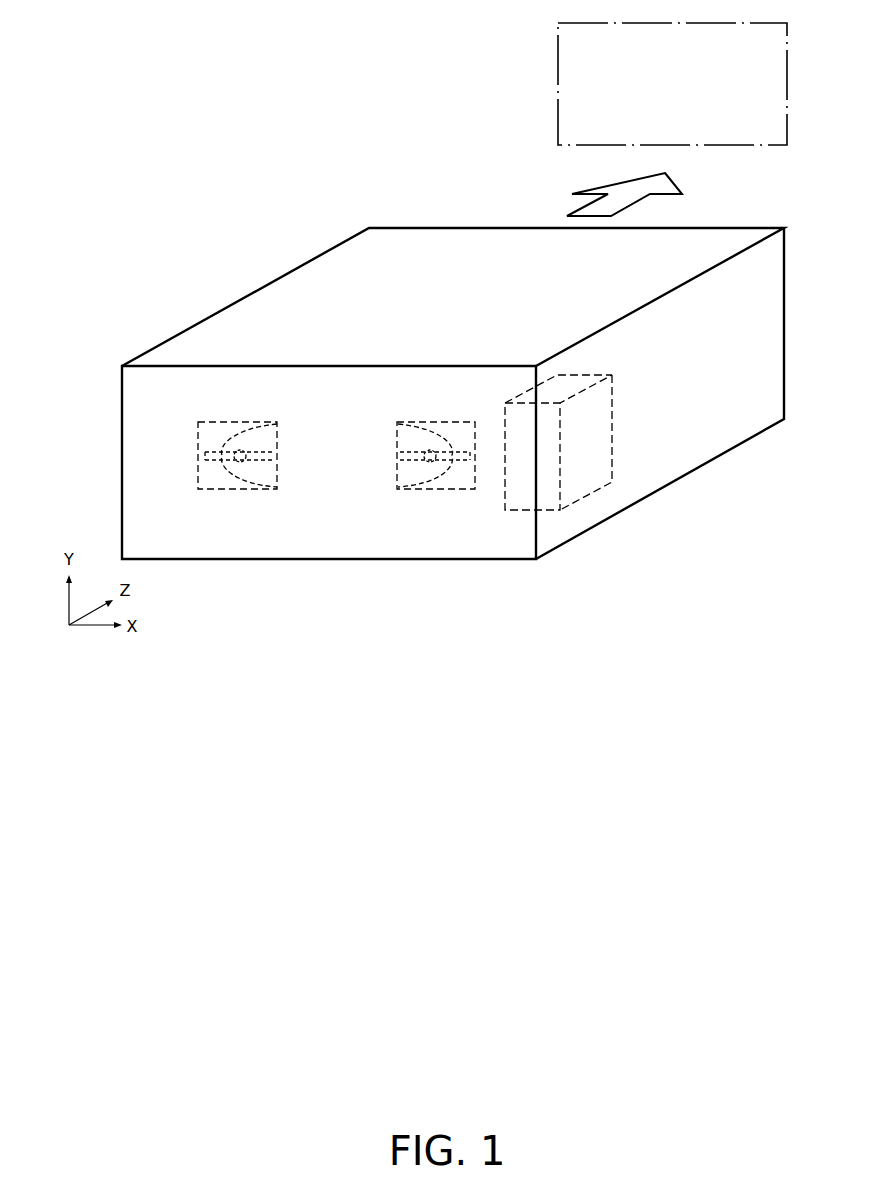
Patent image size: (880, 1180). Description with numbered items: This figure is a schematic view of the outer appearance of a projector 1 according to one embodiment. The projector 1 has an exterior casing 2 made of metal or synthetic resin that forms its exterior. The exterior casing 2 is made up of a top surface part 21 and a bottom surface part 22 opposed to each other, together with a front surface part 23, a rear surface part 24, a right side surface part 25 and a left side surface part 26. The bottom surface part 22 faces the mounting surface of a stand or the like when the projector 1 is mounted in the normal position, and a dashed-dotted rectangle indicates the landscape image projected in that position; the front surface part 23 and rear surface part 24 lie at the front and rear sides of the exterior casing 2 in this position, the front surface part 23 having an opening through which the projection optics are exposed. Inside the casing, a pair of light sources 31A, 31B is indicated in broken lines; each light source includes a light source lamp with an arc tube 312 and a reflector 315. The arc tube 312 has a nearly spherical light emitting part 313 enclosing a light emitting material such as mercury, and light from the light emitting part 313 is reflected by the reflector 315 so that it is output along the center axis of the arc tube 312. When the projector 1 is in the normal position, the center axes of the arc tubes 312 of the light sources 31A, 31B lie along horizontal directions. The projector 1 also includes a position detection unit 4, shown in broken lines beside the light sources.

The projector 1 is at (204, 120).
The exterior casing 2 is at (683, 448).
The position detection unit 4 is at (587, 495).
The top surface part 21 is at (690, 245).
The bottom surface part 22 is at (520, 560).
The front surface part 23 is at (786, 278).
The rear surface part 24 is at (137, 400).
The right side surface part 25 is at (210, 313).
The left side surface part 26 is at (767, 360).
The light source 31A is at (460, 490).
The light source 31B is at (208, 492).
The arc tube 312 is at (265, 465).
The light emitting part 313 is at (238, 438).
The reflector 315 is at (247, 482).